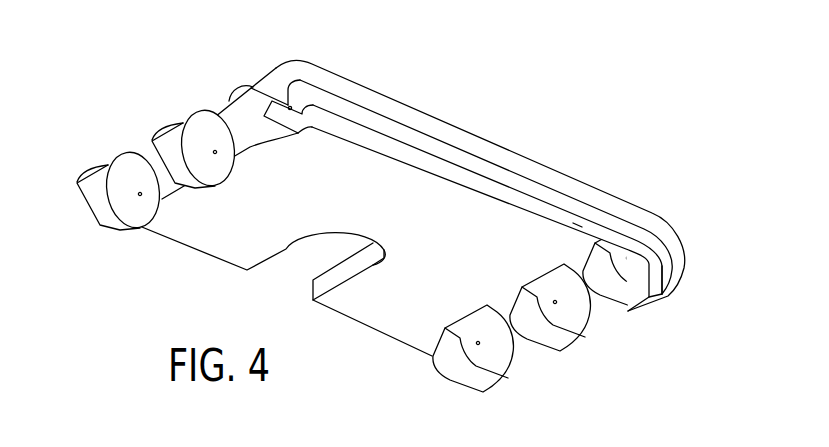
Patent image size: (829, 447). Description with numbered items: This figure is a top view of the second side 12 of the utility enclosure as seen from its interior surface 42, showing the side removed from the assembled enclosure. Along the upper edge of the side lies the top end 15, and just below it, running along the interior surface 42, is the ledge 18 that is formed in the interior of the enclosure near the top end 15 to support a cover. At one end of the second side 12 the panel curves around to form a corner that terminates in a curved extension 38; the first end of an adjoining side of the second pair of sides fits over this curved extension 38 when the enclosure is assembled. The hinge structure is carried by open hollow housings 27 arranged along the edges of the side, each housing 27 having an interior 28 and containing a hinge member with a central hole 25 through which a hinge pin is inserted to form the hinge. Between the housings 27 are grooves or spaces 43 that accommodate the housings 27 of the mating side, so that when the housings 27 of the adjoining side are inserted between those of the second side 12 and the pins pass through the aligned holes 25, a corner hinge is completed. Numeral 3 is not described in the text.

The bend / end portion 3 is at (259, 70).
The second side 12 is at (485, 128).
The top end 15 is at (558, 177).
The ledge 18 is at (573, 223).
The central hole 25 is at (560, 302).
The housing 27 is at (160, 141).
The interior 28 is at (169, 133).
The curved extension 38 is at (670, 278).
The interior surface 42 is at (213, 237).
The groove or space 43 is at (543, 272).